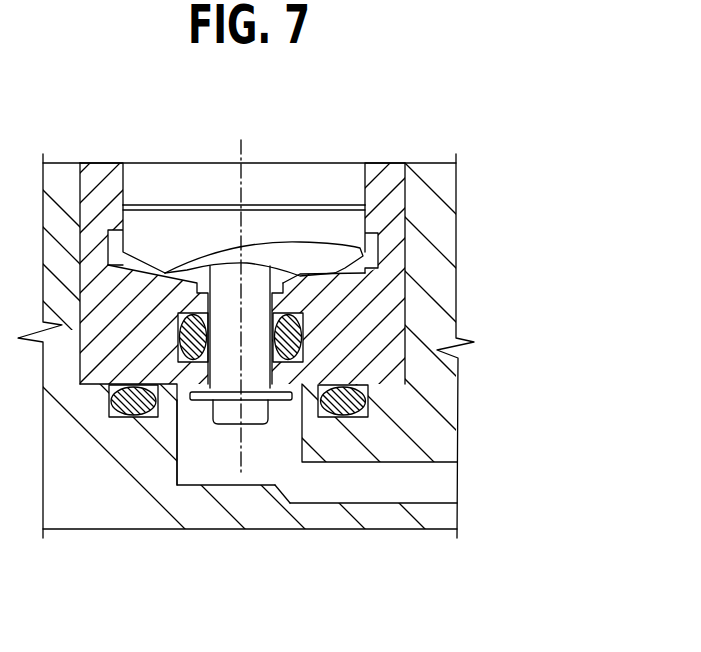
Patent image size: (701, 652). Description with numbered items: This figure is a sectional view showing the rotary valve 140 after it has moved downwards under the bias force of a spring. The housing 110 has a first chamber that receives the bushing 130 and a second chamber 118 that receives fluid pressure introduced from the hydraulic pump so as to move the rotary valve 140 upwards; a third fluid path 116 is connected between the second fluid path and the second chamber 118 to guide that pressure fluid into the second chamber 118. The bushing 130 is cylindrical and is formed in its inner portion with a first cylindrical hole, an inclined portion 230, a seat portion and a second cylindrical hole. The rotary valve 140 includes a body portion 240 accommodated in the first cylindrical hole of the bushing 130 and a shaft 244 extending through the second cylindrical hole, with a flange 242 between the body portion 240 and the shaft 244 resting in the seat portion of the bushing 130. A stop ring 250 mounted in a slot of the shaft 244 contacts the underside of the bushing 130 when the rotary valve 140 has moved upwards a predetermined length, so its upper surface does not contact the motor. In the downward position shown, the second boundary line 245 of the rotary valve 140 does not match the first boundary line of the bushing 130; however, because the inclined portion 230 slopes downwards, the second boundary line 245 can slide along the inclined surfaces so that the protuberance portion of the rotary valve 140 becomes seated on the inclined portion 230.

The housing 110 is at (448, 186).
The third fluid path 116 is at (360, 490).
The second chamber 118 is at (267, 473).
The bushing 130 is at (93, 182).
The rotary valve 140 is at (335, 183).
The inclined portion 230 is at (362, 268).
The body portion 240 is at (318, 252).
The flange 242 is at (258, 265).
The shaft 244 is at (230, 380).
The second boundary line 245 is at (187, 258).
The stop ring 250 is at (177, 457).